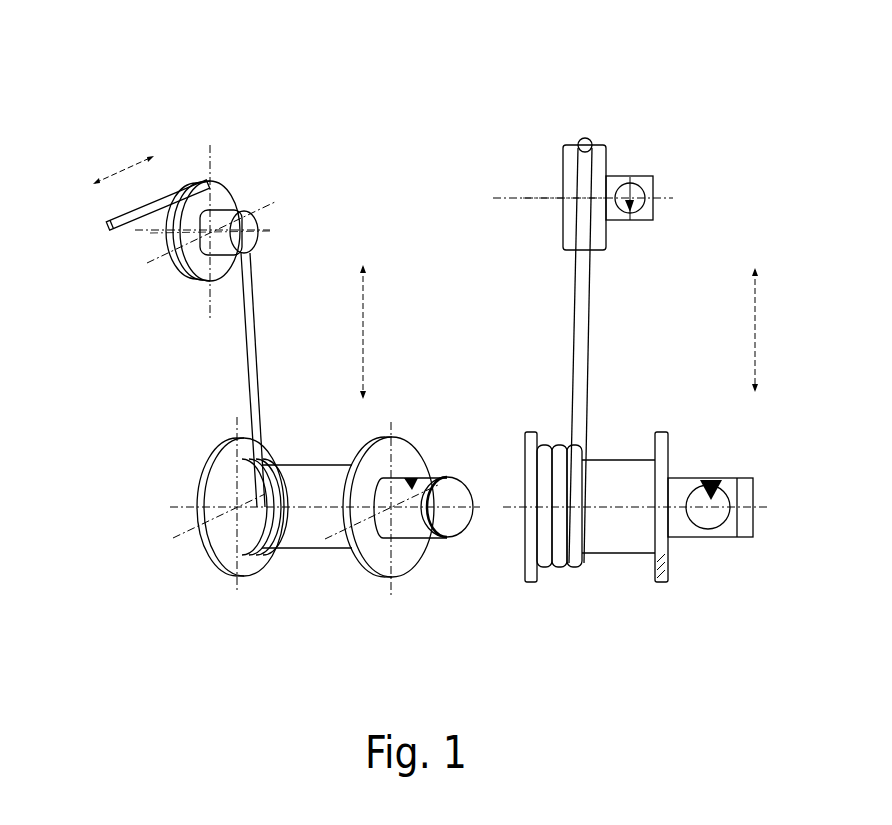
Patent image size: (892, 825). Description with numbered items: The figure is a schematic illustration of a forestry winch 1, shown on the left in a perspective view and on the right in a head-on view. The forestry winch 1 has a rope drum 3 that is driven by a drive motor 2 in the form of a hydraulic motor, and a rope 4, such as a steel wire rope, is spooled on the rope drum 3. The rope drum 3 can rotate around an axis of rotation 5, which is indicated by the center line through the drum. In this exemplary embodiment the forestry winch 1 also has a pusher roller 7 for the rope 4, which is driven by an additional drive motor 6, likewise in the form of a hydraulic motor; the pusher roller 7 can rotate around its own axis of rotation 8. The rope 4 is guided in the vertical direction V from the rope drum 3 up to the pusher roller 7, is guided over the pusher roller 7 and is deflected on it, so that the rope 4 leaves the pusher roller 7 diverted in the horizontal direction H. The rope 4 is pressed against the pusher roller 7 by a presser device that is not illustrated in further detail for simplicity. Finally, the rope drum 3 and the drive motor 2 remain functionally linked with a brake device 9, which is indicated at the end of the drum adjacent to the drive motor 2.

The forestry winch 1 is at (252, 102).
The drive motor 2 is at (407, 487).
The rope drum 3 is at (316, 537).
The rope 4 is at (113, 212).
The axis of rotation 5 is at (185, 503).
The additional drive motor 6 is at (253, 220).
The pusher roller 7 is at (222, 200).
The axis of rotation 8 is at (150, 233).
The brake device 9 is at (437, 483).
The horizontal direction H is at (127, 163).
The vertical direction V is at (367, 333).